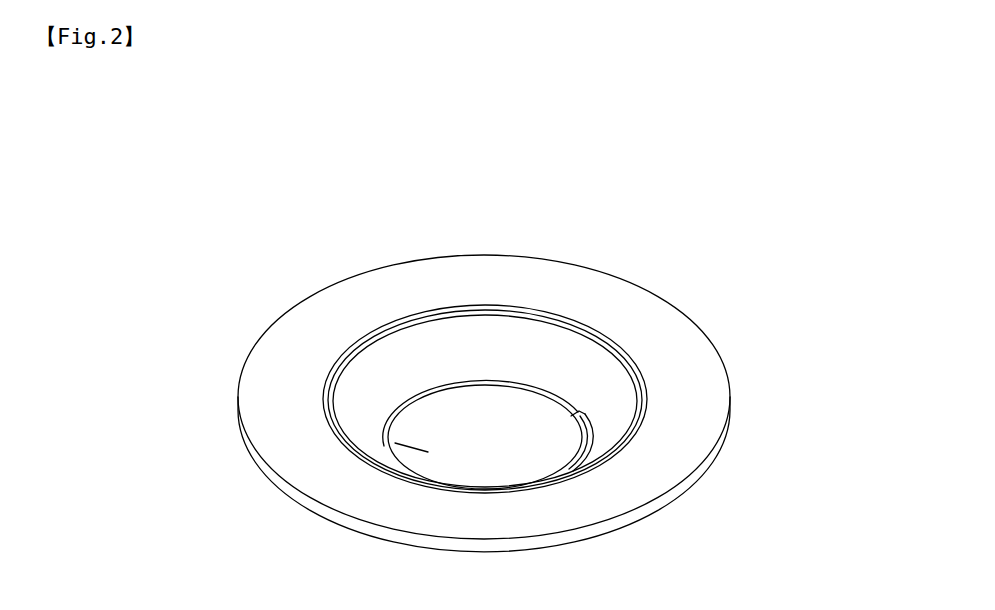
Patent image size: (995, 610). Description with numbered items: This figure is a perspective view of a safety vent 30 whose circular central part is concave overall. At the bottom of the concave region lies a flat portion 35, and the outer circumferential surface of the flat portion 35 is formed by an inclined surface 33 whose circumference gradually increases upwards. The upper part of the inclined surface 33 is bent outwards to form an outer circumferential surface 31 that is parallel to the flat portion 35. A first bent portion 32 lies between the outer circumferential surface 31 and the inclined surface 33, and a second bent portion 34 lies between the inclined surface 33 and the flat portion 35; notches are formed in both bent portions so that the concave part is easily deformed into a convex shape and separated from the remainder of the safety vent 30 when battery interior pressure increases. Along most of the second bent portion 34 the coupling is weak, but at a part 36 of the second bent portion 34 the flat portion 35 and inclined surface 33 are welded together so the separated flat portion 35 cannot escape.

The safety vent 30 is at (433, 364).
The outer circumferential surface 31 is at (260, 415).
The first bent portion 32 is at (413, 313).
The inclined surface 33 is at (553, 402).
The second bent portion 34 is at (583, 430).
The flat portion 35 is at (394, 434).
The welded part of the second bent portion 36 is at (563, 348).